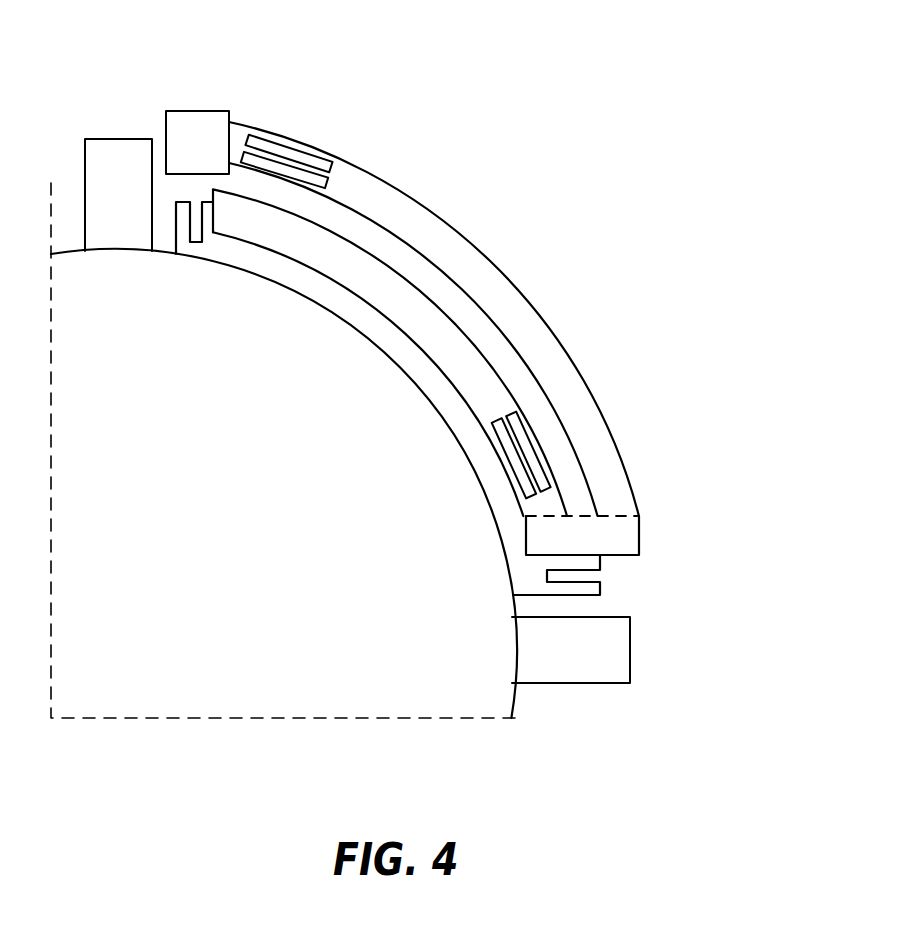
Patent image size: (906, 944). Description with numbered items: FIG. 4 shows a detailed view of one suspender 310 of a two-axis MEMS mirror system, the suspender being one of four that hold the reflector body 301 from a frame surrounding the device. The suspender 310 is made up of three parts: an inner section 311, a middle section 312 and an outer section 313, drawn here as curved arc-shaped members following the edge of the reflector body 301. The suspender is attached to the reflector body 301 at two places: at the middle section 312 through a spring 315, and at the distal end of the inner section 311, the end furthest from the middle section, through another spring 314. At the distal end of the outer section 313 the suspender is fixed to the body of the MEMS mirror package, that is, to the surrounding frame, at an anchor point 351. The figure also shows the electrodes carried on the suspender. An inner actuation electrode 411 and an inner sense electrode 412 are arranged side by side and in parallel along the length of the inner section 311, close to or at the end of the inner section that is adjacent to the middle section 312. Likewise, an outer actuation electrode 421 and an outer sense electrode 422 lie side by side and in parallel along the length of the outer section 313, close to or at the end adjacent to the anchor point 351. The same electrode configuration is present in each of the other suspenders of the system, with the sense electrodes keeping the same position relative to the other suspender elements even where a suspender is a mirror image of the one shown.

The reflector body 301 is at (514, 702).
The first suspender 310 is at (667, 302).
The first inner section 311 is at (400, 330).
The first middle section 312 is at (642, 539).
The first outer section 313 is at (478, 250).
The spring 314 is at (195, 243).
The spring 315 is at (547, 571).
The anchor point 351 is at (195, 111).
The inner actuation electrode 411 is at (537, 485).
The inner sense electrode 412 is at (493, 423).
The outer actuation electrode 421 is at (265, 135).
The outer sense electrode 422 is at (319, 173).